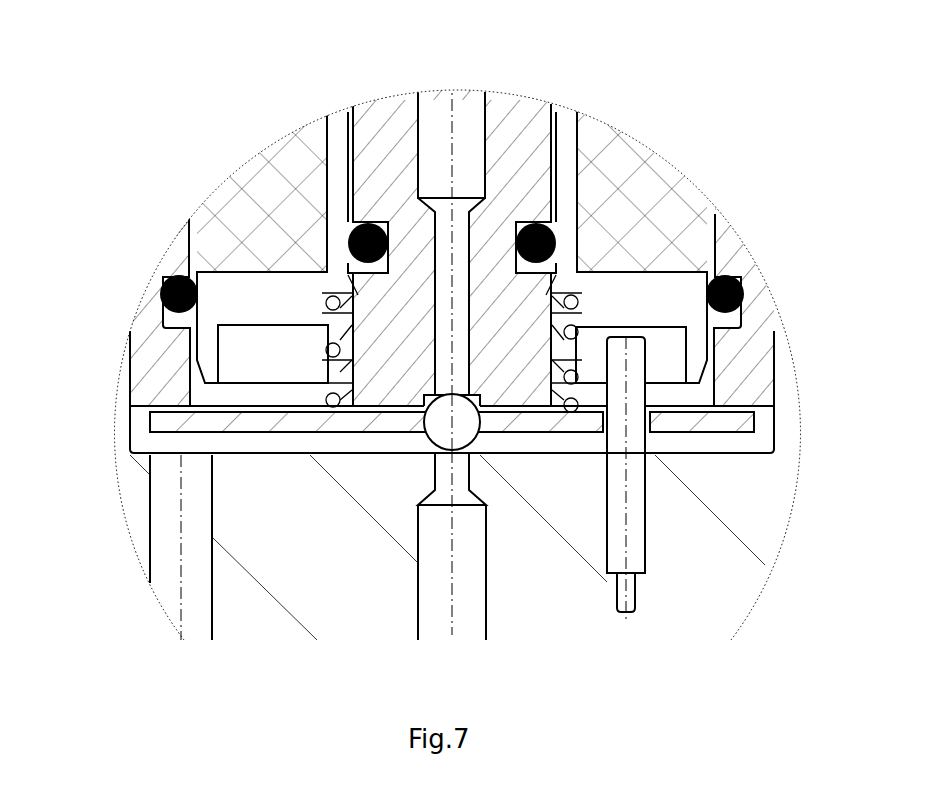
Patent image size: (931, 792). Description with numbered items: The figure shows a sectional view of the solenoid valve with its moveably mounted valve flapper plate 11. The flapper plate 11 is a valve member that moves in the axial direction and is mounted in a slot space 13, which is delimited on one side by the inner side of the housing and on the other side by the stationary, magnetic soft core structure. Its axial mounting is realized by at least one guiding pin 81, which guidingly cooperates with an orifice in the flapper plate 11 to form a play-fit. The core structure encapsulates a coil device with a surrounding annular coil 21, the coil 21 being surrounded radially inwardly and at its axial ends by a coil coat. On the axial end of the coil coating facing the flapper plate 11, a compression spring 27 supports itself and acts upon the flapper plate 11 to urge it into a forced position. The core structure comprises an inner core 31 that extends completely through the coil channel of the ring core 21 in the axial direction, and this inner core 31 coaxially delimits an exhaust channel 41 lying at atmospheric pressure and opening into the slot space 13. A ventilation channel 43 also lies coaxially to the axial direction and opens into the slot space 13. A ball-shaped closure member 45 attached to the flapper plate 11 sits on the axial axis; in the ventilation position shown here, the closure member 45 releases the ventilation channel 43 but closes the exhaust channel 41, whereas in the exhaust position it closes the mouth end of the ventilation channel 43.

The flapper plate 11 is at (213, 537).
The slot space 13 is at (152, 442).
The coil 21 is at (240, 188).
The compression spring 27 is at (333, 357).
The inner core 31 is at (527, 293).
The exhaust channel 41 is at (453, 272).
The ventilation channel 43 is at (467, 580).
The closure member 45 is at (430, 425).
The guiding pin 81 is at (627, 527).